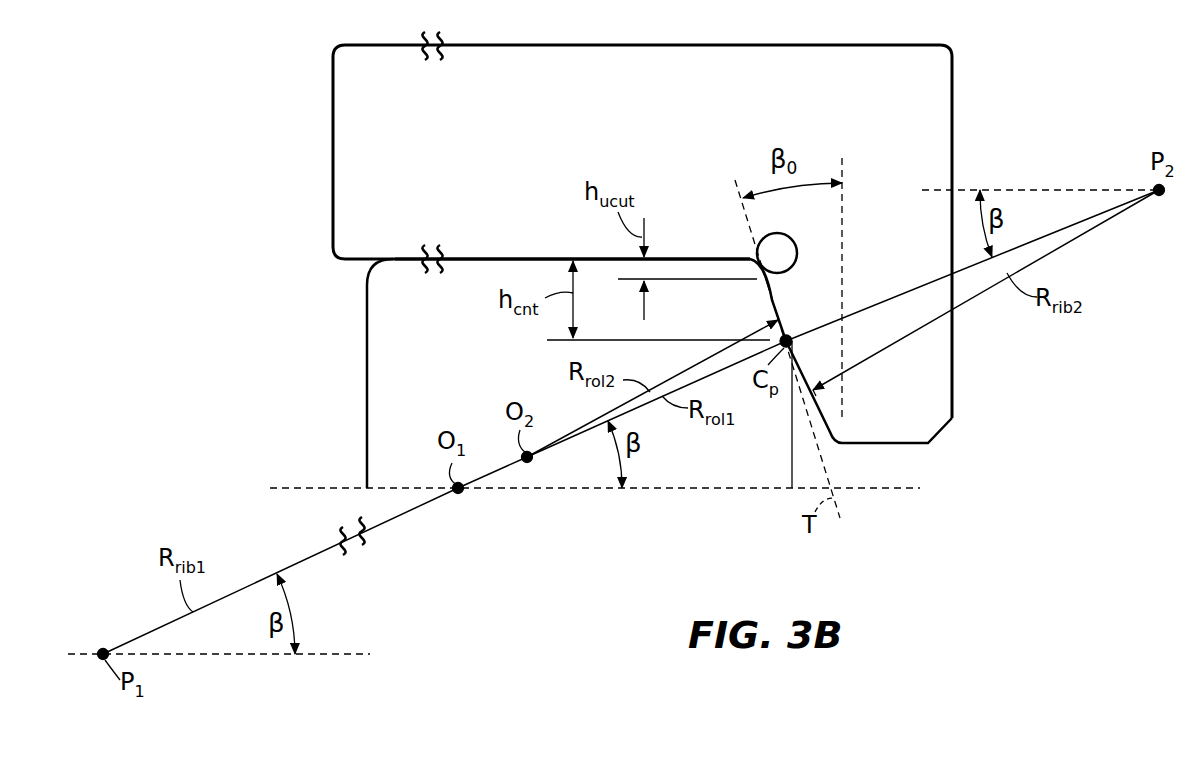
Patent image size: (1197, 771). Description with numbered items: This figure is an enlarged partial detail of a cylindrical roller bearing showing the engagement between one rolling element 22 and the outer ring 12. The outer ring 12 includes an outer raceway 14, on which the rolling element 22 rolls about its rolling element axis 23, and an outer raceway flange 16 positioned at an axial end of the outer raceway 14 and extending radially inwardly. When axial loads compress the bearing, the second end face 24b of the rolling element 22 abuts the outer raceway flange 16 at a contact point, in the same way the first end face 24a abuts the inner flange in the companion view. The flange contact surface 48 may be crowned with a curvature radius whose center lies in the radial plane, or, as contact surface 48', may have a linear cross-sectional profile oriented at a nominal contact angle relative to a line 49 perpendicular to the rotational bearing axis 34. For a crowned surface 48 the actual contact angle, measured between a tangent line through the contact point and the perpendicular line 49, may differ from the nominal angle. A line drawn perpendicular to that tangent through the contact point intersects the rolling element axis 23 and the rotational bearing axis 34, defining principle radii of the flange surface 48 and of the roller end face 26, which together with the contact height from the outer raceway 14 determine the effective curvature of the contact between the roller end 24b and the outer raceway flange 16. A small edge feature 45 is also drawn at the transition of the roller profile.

The outer ring 12 is at (952, 105).
The outer raceway 14 is at (543, 257).
The outer raceway flange 16 is at (917, 420).
The rolling element 22 is at (463, 282).
The rolling element axis 23 is at (318, 485).
The first end face 24a is at (368, 407).
The second end face 24b is at (790, 452).
The roller end face 26 is at (380, 283).
The rotational bearing axis 34 is at (331, 657).
The edge 45 is at (752, 253).
The contact surface 48 is at (819, 358).
The contact surface 48' is at (864, 398).
The line perpendicular to the rotational bearing axis 49 is at (843, 208).